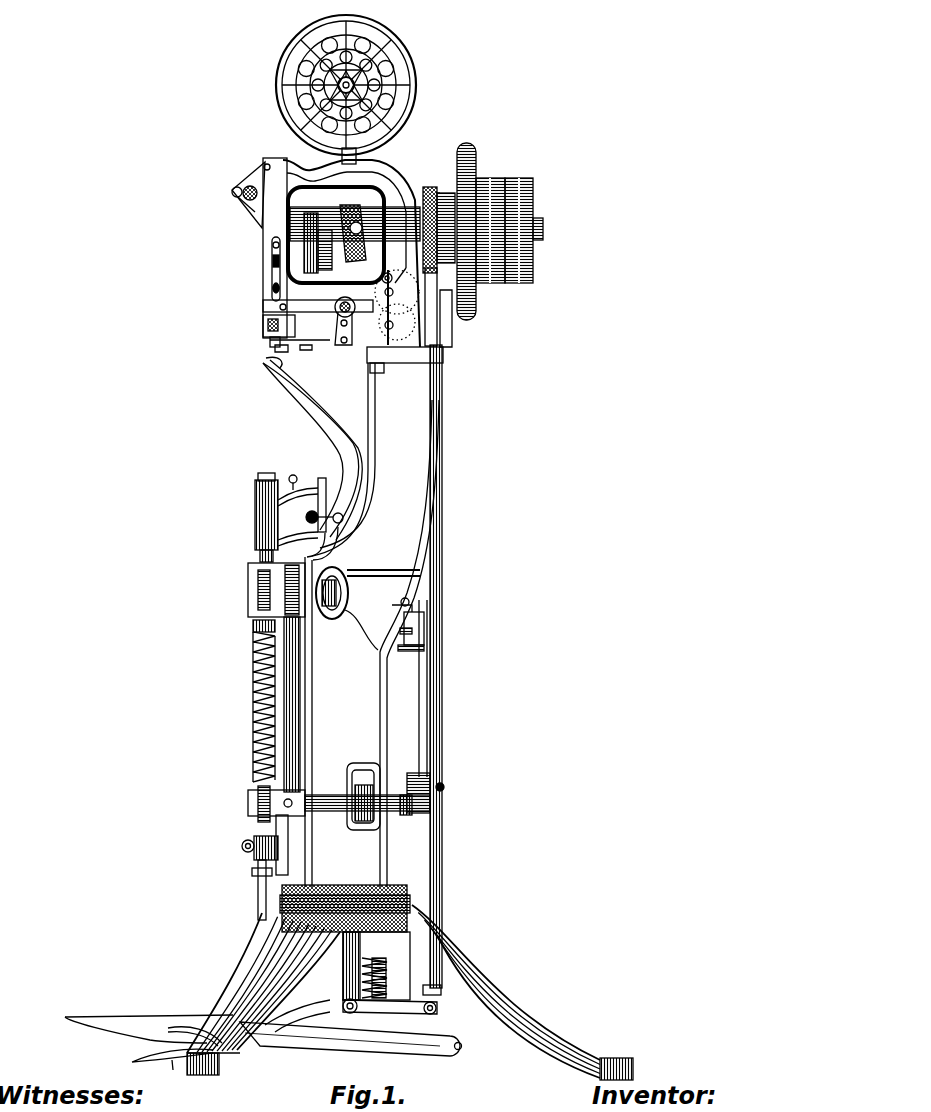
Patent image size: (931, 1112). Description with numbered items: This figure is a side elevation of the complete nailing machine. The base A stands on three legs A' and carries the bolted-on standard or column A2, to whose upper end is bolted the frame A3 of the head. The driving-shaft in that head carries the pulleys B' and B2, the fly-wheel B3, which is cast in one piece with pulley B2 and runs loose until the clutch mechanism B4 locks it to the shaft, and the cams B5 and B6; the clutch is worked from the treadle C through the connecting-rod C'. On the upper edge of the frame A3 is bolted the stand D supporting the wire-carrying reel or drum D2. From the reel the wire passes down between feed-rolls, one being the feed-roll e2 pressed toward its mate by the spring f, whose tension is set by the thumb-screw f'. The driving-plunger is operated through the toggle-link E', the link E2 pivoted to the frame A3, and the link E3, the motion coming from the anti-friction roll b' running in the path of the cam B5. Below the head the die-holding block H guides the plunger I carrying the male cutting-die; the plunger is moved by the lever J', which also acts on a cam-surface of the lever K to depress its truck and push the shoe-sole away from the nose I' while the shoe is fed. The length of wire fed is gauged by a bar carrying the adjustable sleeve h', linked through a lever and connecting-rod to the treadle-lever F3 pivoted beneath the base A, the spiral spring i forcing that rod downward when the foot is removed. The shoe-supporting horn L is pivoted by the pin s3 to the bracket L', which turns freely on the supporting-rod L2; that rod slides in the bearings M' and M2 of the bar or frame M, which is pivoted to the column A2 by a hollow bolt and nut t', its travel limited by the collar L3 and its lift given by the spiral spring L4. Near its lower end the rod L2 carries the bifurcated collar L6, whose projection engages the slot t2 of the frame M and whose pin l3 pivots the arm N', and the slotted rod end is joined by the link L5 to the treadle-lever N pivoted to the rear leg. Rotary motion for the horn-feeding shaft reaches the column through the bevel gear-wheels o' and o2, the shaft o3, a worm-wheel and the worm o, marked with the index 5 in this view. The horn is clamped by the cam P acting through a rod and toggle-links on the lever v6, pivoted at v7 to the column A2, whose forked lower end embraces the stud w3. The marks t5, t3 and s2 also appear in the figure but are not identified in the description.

The wire-carrying reel or drum D2 is at (346, 85).
The stand D is at (358, 153).
The frame of the head A3 is at (350, 182).
The cam B5 is at (384, 205).
The anti-friction roll b' is at (351, 214).
The cam B6 is at (316, 236).
The open slot t2 is at (390, 286).
The toggle-link E' is at (259, 248).
The link E2 is at (265, 165).
The link E3 is at (238, 208).
The spring f is at (265, 244).
The feed-roll e2 is at (272, 262).
The thumb-screw f' is at (264, 288).
The die-holding block H is at (279, 326).
The nose I' is at (261, 338).
The plunger I is at (318, 315).
The sleeve h' is at (346, 298).
The lever J' is at (348, 328).
The lever K is at (306, 343).
The cam t5 is at (399, 303).
The pin l3 is at (392, 269).
The cam roller t3 is at (389, 318).
The fly-wheel B3 is at (476, 229).
The pulley B2 is at (490, 221).
The pulley B' is at (524, 222).
The worm o is at (430, 258).
The pin 5 is at (427, 180).
The clutch mechanism B4 is at (445, 195).
The standard or column A2 is at (383, 482).
The shoe-supporting horn L is at (312, 458).
The supporting-rod L2 is at (260, 556).
The bracket L' is at (302, 512).
The screw s2 is at (296, 474).
The pivot-pin s3 is at (333, 517).
The bearing M' is at (266, 590).
The nut t' is at (335, 593).
The collar L3 is at (253, 624).
The spiral spring L4 is at (253, 650).
The bar or frame M is at (284, 704).
The bearing M2 is at (248, 802).
The cam P is at (362, 820).
The bevel gear-wheel o' is at (415, 800).
The bevel gear-wheel o2 is at (448, 786).
The arm N' is at (299, 845).
The bifurcated collar L6 is at (254, 848).
The link L5 is at (262, 897).
The connecting-rod C' is at (446, 670).
The shaft o3 is at (425, 676).
The lever v6 is at (412, 628).
The pivot v7 is at (402, 603).
The stud w3 is at (408, 655).
The base A is at (345, 942).
The spiral spring i is at (428, 987).
The treadle C is at (390, 1005).
The treadle-lever F3 is at (322, 1000).
The legs A' is at (410, 992).
The treadle-lever N is at (263, 1032).